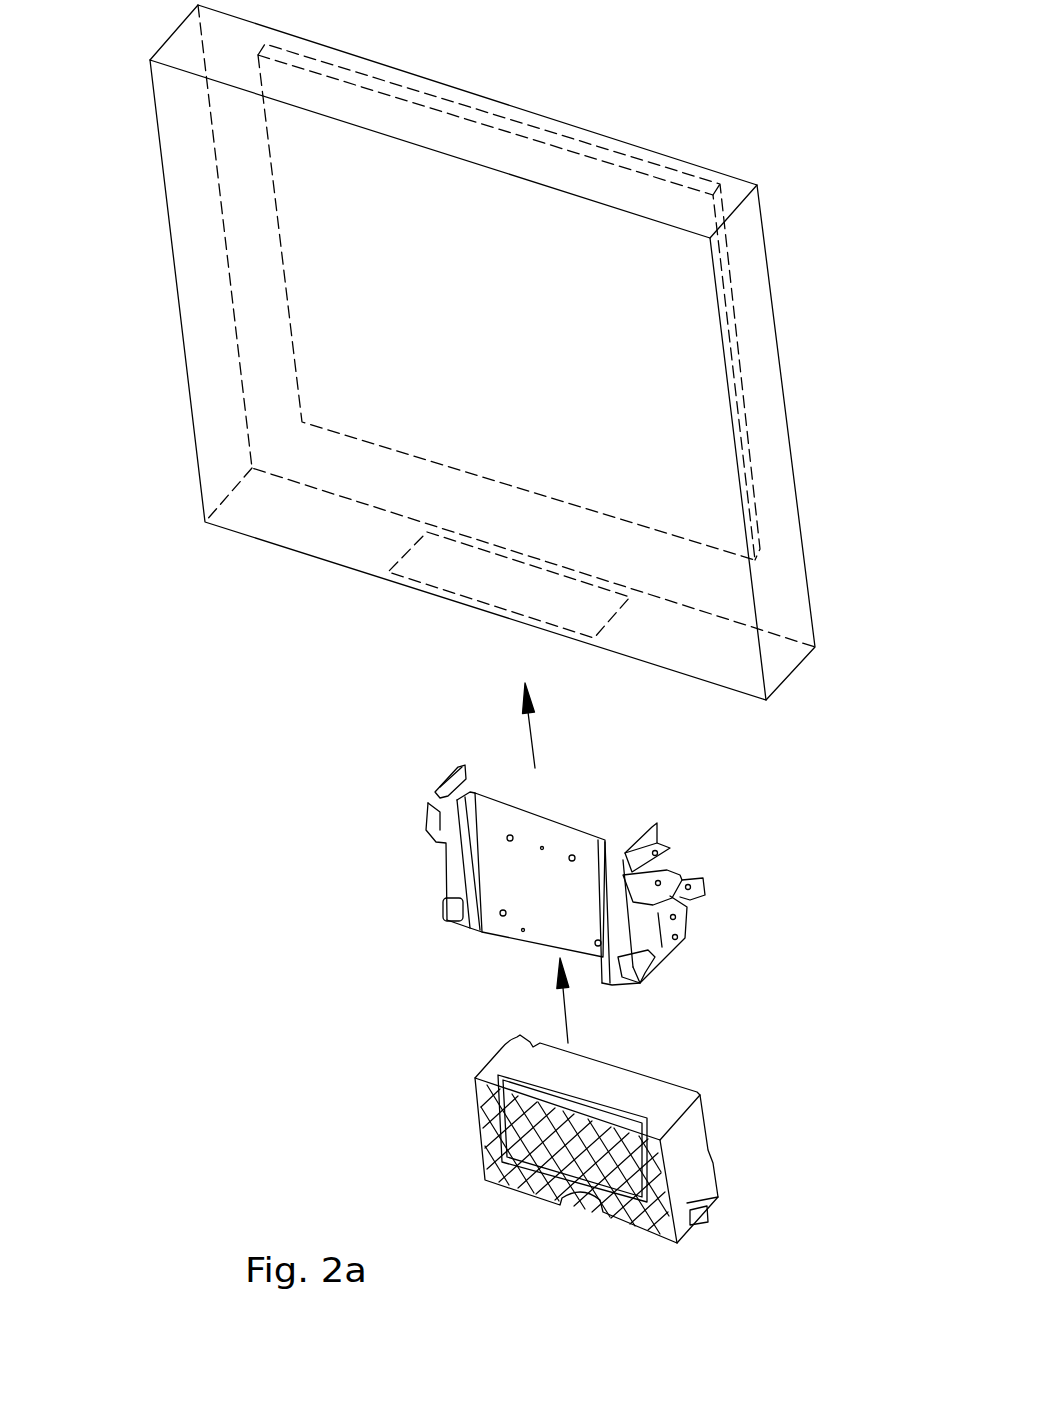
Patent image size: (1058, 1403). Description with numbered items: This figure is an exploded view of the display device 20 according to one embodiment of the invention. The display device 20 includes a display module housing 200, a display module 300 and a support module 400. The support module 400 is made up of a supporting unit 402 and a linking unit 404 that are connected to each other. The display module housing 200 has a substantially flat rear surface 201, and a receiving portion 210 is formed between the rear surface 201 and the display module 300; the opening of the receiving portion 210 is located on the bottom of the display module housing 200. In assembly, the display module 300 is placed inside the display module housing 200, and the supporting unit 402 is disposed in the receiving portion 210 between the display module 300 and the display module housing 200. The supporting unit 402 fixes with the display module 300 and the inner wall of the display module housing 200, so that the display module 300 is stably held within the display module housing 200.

The display device 20 is at (878, 28).
The display module housing 200 is at (474, 352).
The rear surface 201 is at (193, 168).
The display module 300 is at (283, 267).
The receiving portion 210 is at (440, 562).
The support module 400 is at (510, 1004).
The supporting unit 402 is at (438, 860).
The linking unit 404 is at (497, 1057).